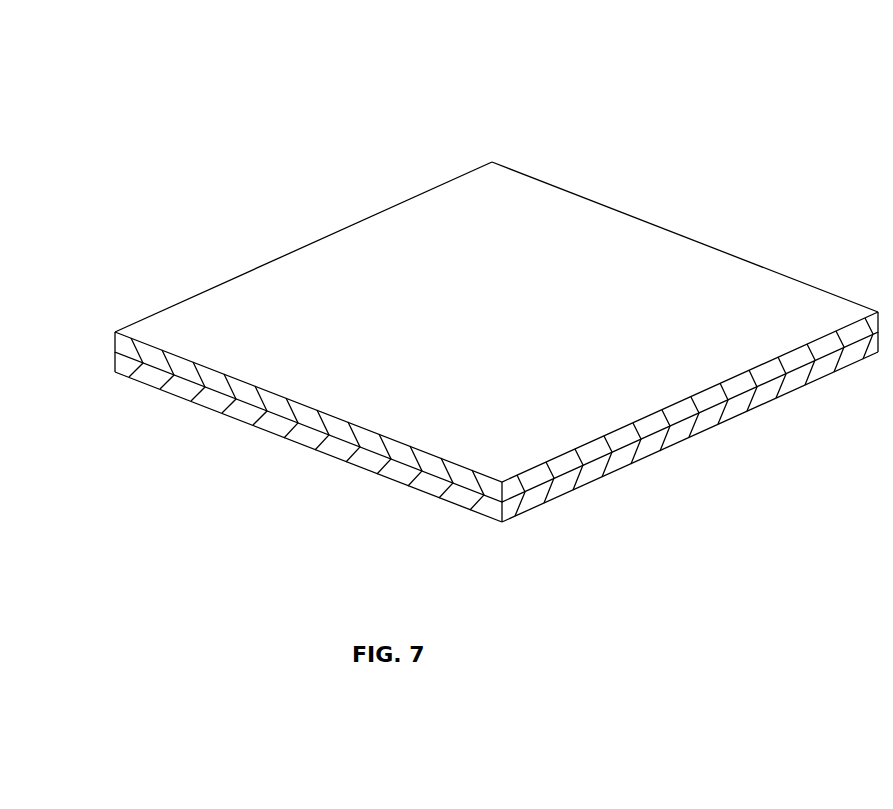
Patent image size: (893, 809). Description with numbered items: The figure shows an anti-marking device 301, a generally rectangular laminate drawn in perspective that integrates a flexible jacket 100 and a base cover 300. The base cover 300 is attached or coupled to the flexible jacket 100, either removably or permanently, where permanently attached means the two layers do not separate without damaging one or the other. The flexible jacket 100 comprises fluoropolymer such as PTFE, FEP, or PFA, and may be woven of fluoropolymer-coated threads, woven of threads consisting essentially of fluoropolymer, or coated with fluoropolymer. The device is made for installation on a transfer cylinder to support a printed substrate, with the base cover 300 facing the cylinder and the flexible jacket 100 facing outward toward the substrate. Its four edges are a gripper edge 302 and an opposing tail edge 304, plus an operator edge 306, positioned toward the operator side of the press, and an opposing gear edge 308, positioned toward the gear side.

The anti-marking device 301 is at (420, 116).
The flexible jacket 100 is at (115, 343).
The base cover 300 is at (115, 365).
The gripper edge 302 is at (298, 427).
The tail edge 304 is at (664, 229).
The operator edge 306 is at (320, 238).
The gear edge 308 is at (690, 426).